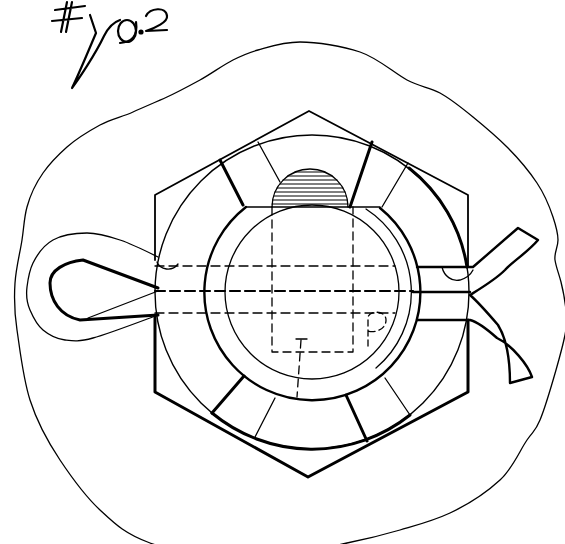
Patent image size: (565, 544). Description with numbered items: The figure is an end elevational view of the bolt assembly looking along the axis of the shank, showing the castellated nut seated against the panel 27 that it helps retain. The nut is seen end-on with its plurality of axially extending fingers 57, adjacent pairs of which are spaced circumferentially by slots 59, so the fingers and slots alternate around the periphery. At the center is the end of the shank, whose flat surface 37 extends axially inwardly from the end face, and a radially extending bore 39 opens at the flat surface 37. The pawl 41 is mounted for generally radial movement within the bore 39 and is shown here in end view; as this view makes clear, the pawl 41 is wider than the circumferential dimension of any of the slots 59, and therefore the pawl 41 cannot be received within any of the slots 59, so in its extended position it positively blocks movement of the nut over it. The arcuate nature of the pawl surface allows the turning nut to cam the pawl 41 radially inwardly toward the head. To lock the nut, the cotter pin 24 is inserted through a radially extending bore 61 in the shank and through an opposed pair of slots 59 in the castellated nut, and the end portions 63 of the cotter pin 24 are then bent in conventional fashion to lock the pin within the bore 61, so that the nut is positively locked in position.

The panel 27 is at (315, 80).
The axially extending fingers 57 is at (295, 145).
The slots 59 is at (408, 160).
The pawl 41 is at (325, 166).
The flat surface 37 is at (392, 170).
The cotter pin 24 is at (92, 327).
The end portions 63 is at (518, 253).
The radially extending bore 39 is at (292, 386).
The radially extending bore 61 is at (385, 334).